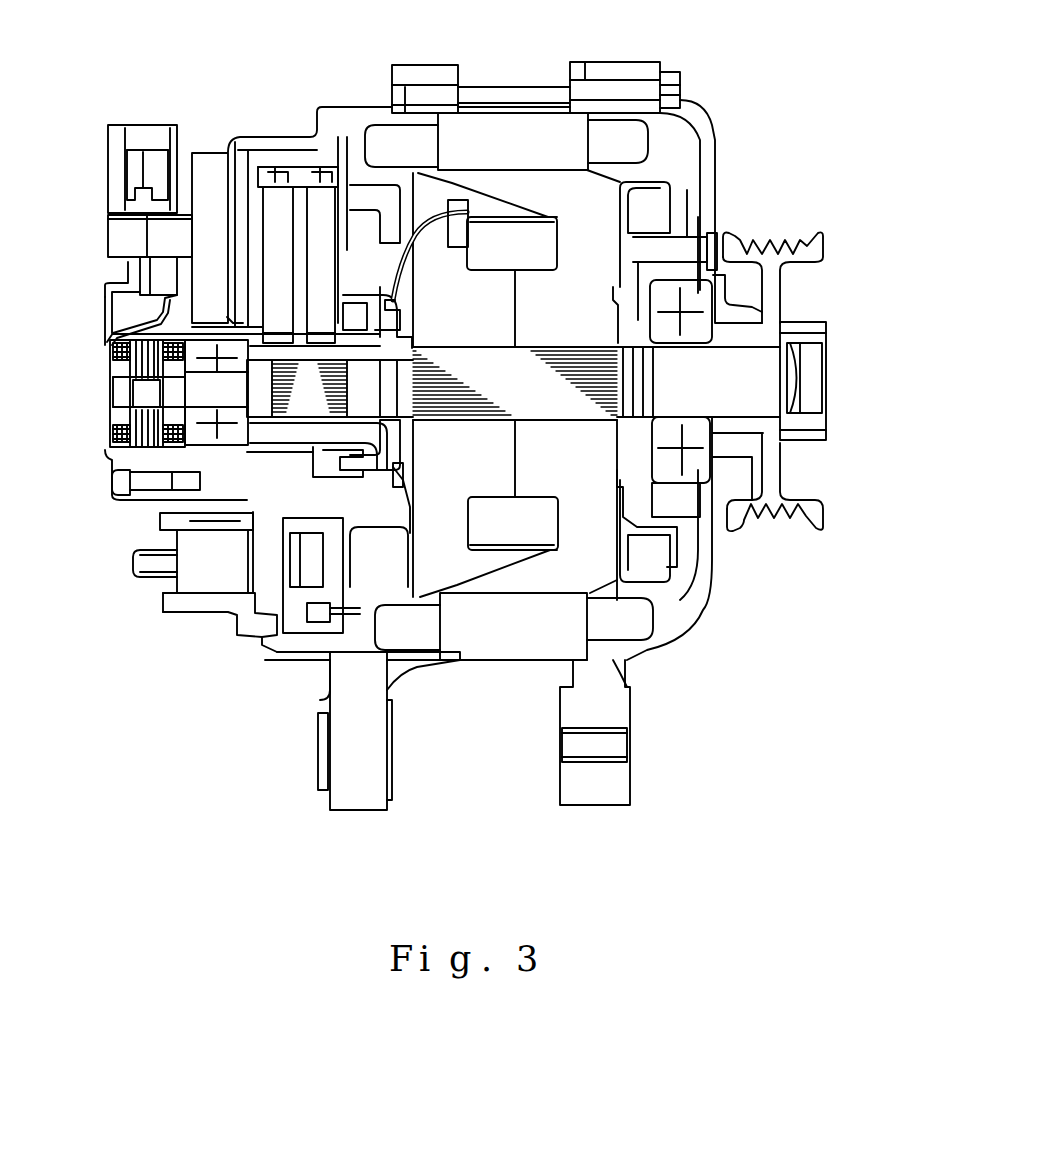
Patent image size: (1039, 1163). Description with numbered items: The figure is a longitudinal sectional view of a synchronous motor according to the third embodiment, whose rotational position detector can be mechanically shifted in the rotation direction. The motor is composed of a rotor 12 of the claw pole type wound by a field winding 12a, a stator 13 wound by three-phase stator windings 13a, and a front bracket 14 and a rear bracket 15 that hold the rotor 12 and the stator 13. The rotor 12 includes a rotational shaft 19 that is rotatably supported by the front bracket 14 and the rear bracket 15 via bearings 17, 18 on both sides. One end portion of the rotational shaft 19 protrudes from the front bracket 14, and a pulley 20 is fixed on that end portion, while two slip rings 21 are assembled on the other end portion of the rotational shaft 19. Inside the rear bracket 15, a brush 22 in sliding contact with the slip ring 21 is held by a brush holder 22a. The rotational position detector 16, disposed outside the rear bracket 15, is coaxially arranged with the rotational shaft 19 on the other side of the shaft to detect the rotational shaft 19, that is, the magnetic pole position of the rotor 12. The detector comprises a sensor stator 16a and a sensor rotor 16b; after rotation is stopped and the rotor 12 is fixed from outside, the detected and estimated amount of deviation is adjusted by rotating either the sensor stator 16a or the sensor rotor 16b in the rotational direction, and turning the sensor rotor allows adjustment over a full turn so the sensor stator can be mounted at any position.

The rotor 12 is at (697, 475).
The field winding 12a is at (487, 560).
The stator 13 is at (500, 110).
The three-phase stator windings 13a is at (700, 142).
The front bracket 14 is at (655, 650).
The rear bracket 15 is at (262, 658).
The rotational position detector 16 is at (108, 345).
The sensor stator 16a is at (113, 437).
The sensor rotor 16b is at (120, 369).
The bearing 17 is at (827, 500).
The bearing 18 is at (200, 428).
The rotational shaft 19 is at (730, 358).
The pulley 20 is at (800, 243).
The slip rings 21 is at (403, 305).
The brush 22 is at (278, 237).
The brush holder 22a is at (272, 167).